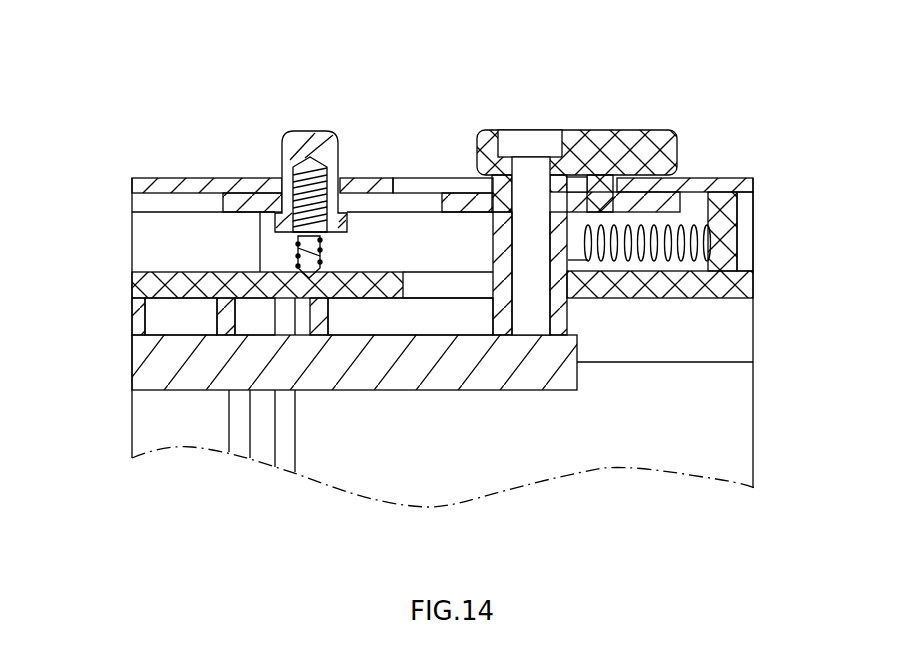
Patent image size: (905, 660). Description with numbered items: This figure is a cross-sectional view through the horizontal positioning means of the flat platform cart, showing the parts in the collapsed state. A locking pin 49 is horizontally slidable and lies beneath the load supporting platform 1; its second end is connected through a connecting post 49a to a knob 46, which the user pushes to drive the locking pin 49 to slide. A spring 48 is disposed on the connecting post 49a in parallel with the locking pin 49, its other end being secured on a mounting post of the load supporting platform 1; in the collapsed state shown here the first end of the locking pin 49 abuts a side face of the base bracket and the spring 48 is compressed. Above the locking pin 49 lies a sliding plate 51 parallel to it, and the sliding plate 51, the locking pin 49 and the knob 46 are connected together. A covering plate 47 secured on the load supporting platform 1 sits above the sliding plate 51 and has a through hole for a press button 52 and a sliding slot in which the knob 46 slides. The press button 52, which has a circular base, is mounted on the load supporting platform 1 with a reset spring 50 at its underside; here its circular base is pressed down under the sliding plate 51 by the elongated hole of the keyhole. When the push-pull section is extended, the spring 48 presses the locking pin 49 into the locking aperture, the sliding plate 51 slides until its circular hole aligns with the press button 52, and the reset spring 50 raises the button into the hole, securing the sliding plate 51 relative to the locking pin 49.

The load supporting platform 1 is at (490, 342).
The knob 46 is at (592, 199).
The covering plate 47 is at (694, 156).
The spring 48 is at (708, 264).
The locking pin 49 is at (413, 392).
The connecting post 49a is at (688, 334).
The reset spring 50 is at (177, 251).
The sliding plate 51 is at (275, 129).
The press button 52 is at (251, 120).